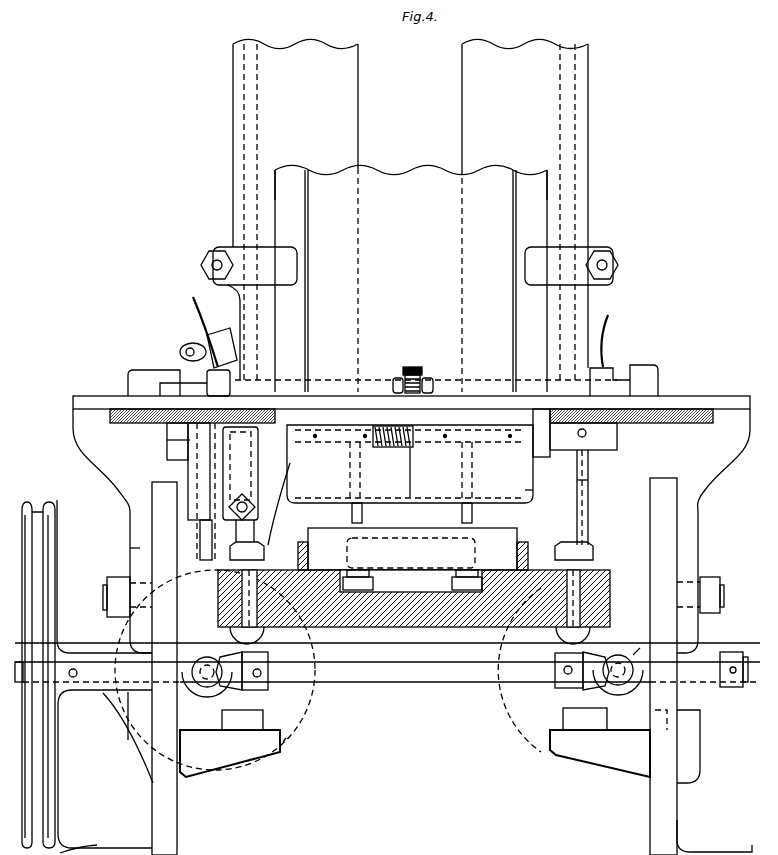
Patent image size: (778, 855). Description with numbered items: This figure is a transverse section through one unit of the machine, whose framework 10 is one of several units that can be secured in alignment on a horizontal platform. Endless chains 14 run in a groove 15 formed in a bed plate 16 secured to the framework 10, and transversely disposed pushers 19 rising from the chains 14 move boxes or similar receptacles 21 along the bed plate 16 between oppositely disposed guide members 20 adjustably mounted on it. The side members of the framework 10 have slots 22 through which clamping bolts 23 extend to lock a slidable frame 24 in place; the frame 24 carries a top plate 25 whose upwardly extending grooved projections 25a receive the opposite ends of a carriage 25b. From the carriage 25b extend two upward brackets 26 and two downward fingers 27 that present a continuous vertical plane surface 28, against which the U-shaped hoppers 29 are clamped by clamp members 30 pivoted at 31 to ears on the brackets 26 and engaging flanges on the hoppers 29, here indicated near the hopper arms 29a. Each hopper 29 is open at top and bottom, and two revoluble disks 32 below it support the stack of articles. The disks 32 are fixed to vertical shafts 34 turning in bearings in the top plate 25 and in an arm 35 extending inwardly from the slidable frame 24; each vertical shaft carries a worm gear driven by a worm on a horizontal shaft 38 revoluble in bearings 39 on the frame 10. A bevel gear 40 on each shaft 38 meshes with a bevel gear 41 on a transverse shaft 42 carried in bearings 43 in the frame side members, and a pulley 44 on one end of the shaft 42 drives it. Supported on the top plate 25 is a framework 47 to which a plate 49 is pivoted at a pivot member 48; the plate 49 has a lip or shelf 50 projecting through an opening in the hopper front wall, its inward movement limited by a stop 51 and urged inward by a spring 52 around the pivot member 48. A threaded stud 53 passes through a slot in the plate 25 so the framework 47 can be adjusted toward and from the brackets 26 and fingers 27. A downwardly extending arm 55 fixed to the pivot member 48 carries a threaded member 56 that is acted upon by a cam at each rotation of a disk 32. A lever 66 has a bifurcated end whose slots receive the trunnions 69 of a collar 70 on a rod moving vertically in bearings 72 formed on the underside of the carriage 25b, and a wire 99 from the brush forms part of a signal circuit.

The framework 10 is at (177, 815).
The endless chains 14 is at (360, 594).
The groove 15 is at (411, 616).
The bed plate 16 is at (414, 640).
The pushers 19 is at (347, 552).
The guide members 20 is at (300, 558).
The boxes or similar receptacles 21 is at (497, 537).
The slots 22 is at (135, 550).
The clamping bolts 23 is at (105, 603).
The slidable frame 24 is at (100, 468).
The top plate 25 is at (73, 398).
The grooved projections 25a is at (676, 360).
The carriage 25b is at (628, 350).
The brackets 26 is at (233, 95).
The fingers 27 is at (350, 468).
The vertical plane surface 28 is at (482, 85).
The U-shaped hoppers 29 is at (405, 178).
The yoke arms 29a is at (285, 172).
The clamp members 30 is at (287, 250).
The pivot 31 is at (212, 251).
The revoluble disks 32 is at (122, 412).
The vertical shafts 34 is at (588, 493).
The arm 35 is at (252, 758).
The horizontal shaft 38 is at (208, 688).
The bearings 39 is at (640, 650).
The bevel gear 40 is at (192, 722).
The bevel gear 41 is at (268, 688).
The transverse shaft 42 is at (350, 674).
The bearings 43 is at (725, 688).
The pulley 44 is at (57, 578).
The framework 47 is at (452, 385).
The pivot member 48 is at (560, 451).
The plate 49 is at (523, 495).
The lip or shelf 50 is at (428, 503).
The stop 51 is at (290, 470).
The spring 52 is at (395, 447).
The threaded stud 53 is at (411, 368).
The arm 55 is at (243, 492).
The member 56 is at (258, 507).
The lever 66 is at (224, 335).
The trunnions 69 is at (193, 343).
The collar 70 is at (200, 378).
The bearings 72 is at (167, 440).
The wire 99 is at (193, 303).